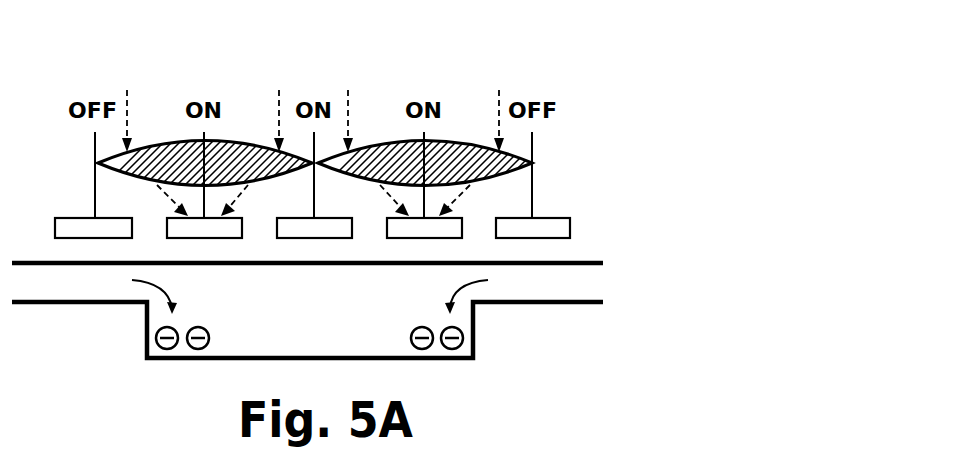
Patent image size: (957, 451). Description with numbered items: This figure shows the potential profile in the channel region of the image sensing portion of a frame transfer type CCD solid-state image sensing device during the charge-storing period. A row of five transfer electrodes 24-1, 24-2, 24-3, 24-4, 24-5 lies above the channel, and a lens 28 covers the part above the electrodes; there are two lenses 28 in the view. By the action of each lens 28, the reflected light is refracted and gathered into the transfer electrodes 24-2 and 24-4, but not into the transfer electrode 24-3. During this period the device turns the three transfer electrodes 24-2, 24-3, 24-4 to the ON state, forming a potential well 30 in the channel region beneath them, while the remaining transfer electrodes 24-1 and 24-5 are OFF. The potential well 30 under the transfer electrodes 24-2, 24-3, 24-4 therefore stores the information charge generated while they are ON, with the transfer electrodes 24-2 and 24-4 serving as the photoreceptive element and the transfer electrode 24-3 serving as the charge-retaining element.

The lens 28 is at (163, 147).
The transfer electrode 24-1 is at (84, 185).
The transfer electrode 24-2 is at (204, 199).
The transfer electrode 24-3 is at (314, 199).
The transfer electrode 24-4 is at (424, 199).
The transfer electrode 24-5 is at (541, 185).
The potential well 30 is at (474, 333).